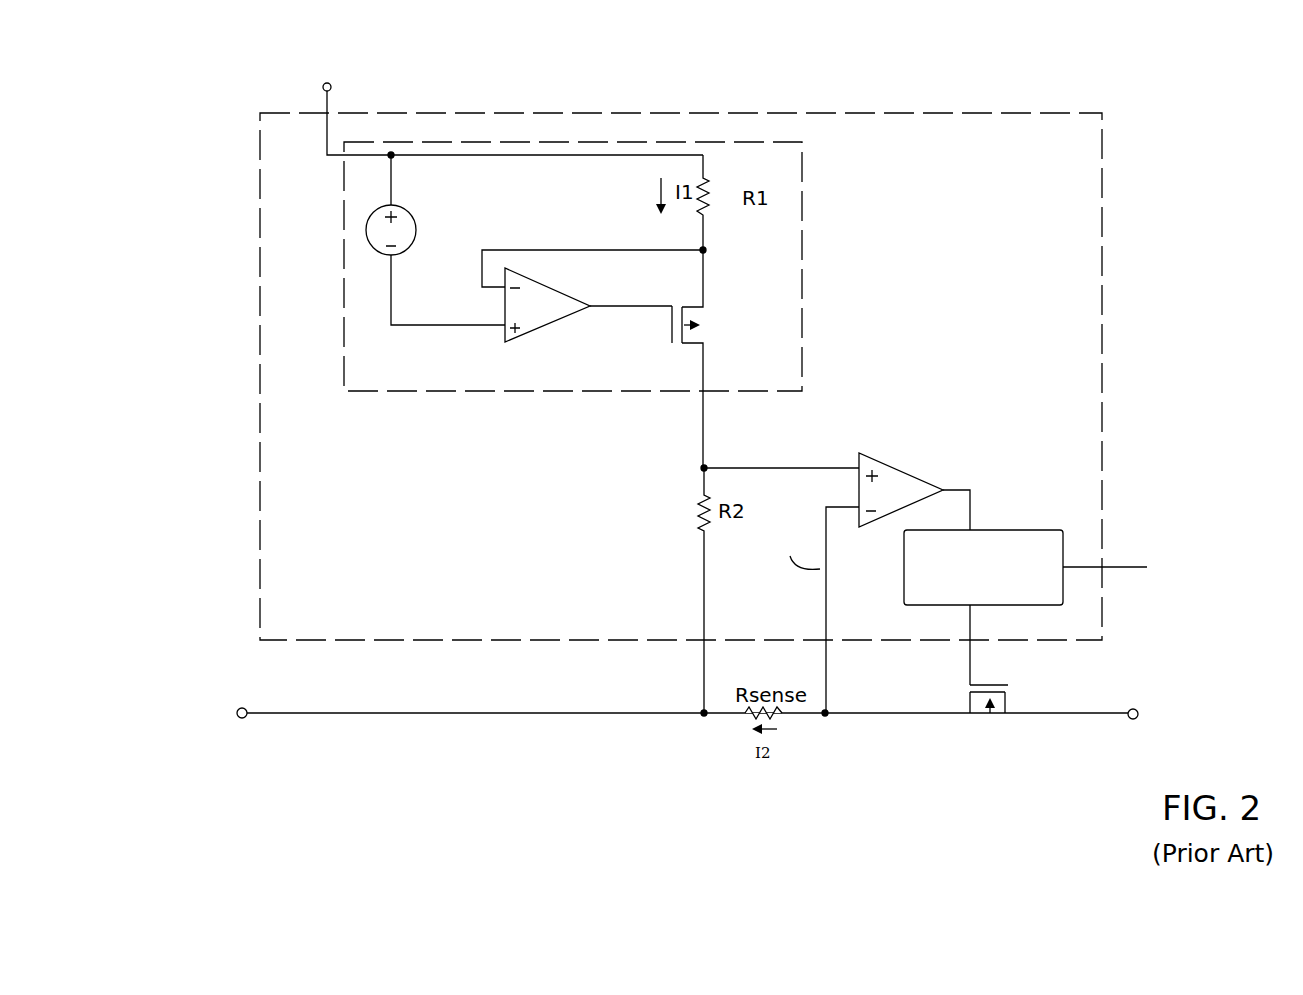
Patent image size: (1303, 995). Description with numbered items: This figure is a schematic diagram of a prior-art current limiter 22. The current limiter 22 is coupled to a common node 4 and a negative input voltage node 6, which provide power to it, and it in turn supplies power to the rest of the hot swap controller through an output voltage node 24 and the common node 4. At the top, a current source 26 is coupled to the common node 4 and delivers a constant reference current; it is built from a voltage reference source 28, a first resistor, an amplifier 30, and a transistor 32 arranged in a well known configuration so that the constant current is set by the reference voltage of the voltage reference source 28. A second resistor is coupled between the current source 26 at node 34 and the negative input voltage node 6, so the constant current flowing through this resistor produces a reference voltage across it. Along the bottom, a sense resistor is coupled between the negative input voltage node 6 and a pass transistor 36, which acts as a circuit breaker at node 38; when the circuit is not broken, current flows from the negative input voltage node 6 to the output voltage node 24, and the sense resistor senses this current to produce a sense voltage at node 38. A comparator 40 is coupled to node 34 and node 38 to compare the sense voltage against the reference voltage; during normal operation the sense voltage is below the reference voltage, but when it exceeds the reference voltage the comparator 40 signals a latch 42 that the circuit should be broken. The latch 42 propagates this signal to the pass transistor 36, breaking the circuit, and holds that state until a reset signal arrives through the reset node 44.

The current limiter 22 is at (160, 101).
The common node 4 is at (329, 101).
The negative VIN node 6 is at (238, 718).
The VOUT node 24 is at (1128, 720).
The current source 26 is at (802, 226).
The voltage reference source 28 is at (412, 212).
The amplifier 30 is at (548, 327).
The transistor 32 is at (712, 326).
The node 34 is at (701, 467).
The pass transistor 36 is at (985, 722).
The node 38 is at (823, 716).
The comparator 40 is at (902, 470).
The latch 42 is at (1015, 530).
The reset node 44 is at (1128, 567).